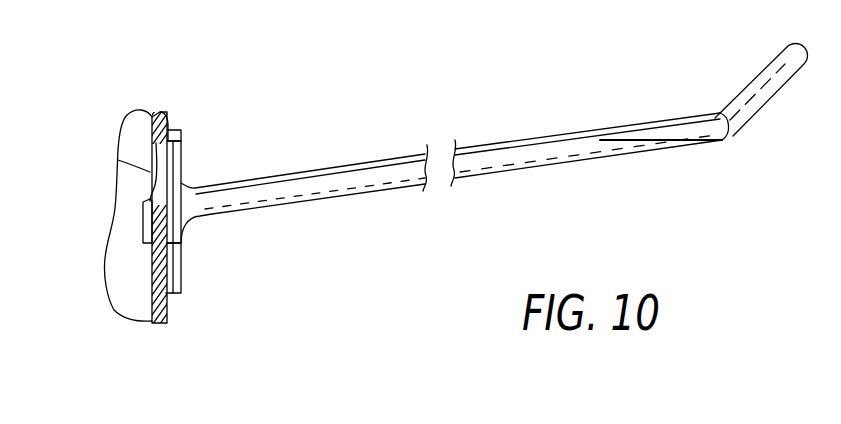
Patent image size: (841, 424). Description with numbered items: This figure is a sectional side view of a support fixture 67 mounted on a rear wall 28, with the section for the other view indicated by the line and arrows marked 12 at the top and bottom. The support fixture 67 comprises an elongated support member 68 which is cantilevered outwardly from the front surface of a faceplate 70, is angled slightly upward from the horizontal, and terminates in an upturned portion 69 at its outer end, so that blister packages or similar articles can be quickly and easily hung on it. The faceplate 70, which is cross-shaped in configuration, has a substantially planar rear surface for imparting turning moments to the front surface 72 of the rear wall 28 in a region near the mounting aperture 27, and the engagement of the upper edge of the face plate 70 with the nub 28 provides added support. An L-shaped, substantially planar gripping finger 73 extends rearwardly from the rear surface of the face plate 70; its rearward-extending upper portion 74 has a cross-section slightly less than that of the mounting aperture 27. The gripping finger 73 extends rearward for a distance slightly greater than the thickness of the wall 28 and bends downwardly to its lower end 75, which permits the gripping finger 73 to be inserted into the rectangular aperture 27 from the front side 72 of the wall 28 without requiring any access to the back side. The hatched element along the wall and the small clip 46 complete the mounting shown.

The section line 12- 12 is at (167, 112).
The mounting aperture 27 is at (150, 171).
The rear wall 28 is at (172, 127).
The clip 46 is at (178, 133).
The support fixture 67 is at (415, 120).
The elongated support member 68 is at (322, 178).
The upturned portion 69 is at (757, 97).
The faceplate 70 is at (173, 270).
The front surface 72 is at (168, 316).
The gripping finger 73 is at (133, 196).
The upper portion 74 is at (181, 178).
The lower end 75 is at (143, 228).